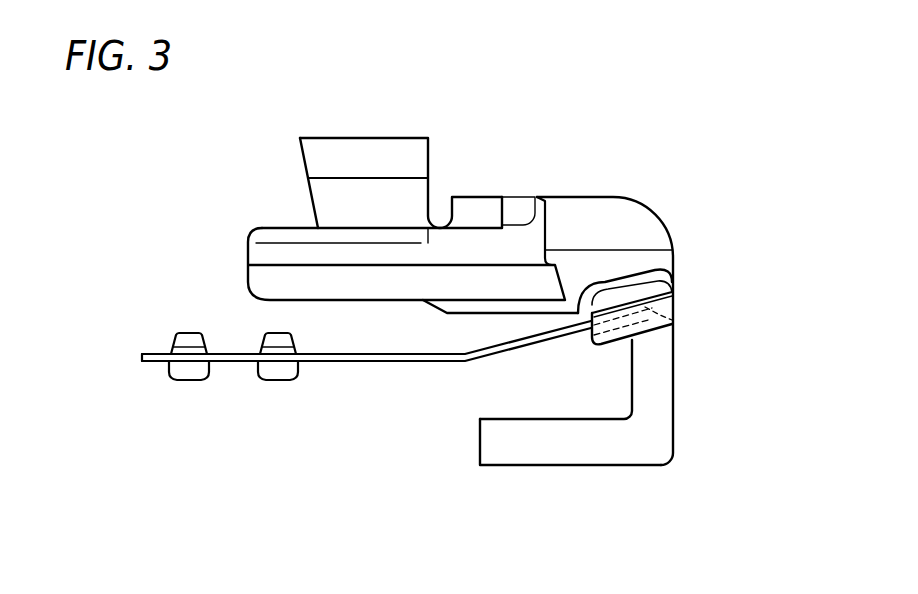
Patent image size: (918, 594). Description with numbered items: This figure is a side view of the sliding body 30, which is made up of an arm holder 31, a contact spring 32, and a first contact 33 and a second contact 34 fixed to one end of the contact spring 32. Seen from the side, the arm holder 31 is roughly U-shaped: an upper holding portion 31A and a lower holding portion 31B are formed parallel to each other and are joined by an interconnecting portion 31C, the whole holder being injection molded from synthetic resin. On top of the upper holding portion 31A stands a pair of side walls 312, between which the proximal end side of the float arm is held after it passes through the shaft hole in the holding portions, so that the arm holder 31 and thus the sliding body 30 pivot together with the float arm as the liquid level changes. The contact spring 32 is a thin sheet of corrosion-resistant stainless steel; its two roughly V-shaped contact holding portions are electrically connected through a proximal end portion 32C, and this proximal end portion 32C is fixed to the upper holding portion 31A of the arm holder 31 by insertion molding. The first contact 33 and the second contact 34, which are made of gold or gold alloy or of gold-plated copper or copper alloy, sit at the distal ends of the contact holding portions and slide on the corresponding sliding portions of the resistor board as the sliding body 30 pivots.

The sliding body 30 is at (629, 129).
The arm holder 31 is at (684, 227).
The upper holding portion 31A is at (270, 278).
The lower holding portion 31B is at (533, 453).
The interconnecting portion 31C is at (662, 357).
The side walls 312 is at (485, 205).
The contact spring 32 is at (367, 363).
The proximal end portion 32C is at (673, 322).
The first contact 33 is at (188, 380).
The second contact 34 is at (277, 380).